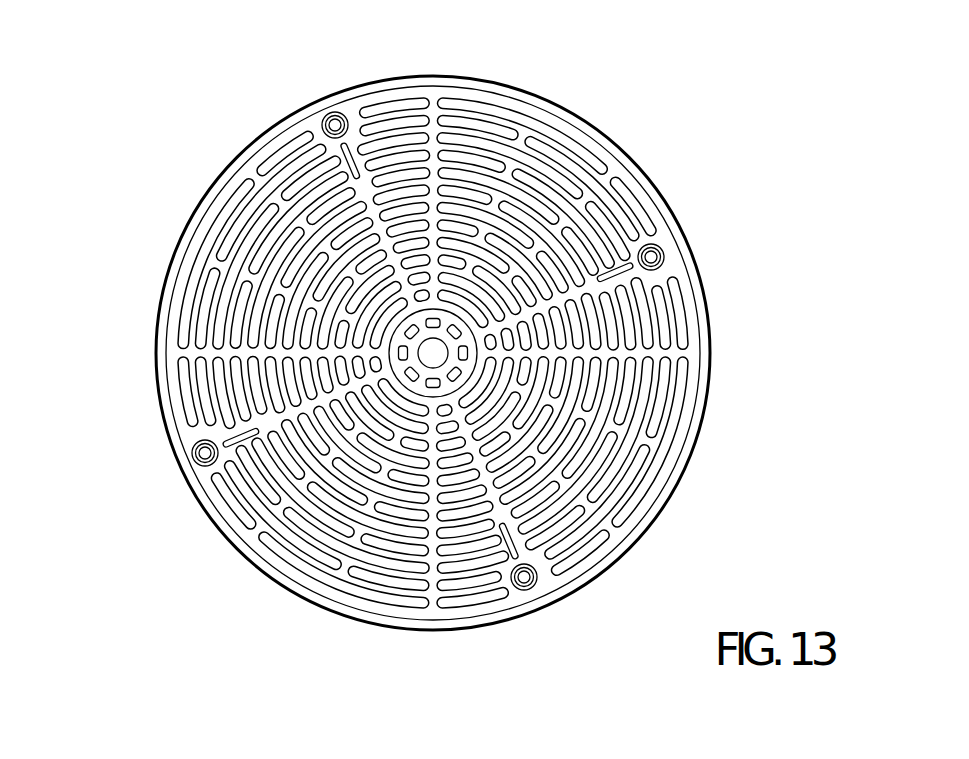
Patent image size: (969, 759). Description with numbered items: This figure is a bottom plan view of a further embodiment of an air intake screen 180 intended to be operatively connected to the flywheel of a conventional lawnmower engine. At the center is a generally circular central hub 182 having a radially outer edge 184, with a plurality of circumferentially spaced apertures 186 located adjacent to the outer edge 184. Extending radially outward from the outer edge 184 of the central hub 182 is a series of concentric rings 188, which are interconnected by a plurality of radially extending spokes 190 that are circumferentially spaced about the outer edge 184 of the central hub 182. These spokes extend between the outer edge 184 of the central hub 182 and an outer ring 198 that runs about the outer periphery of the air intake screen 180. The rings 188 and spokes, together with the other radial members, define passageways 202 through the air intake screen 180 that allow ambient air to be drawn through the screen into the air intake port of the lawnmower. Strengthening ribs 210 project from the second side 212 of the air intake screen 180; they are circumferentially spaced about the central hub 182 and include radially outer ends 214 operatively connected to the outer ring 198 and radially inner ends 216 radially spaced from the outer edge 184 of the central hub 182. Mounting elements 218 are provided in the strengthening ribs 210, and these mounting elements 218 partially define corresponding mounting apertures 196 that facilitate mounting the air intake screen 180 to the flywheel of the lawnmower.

The air intake screen 180 is at (737, 392).
The central hub 182 is at (640, 228).
The radially outer edge 184 is at (437, 180).
The apertures 186 is at (402, 322).
The concentric rings 188 is at (385, 172).
The spokes 190 is at (240, 372).
The mounting apertures 196 is at (322, 124).
The outer ring 198 is at (600, 92).
The passageways 202 is at (265, 165).
The strengthening ribs 210 is at (350, 130).
The second side 212 is at (197, 258).
The radially outer ends 214 is at (323, 112).
The radially inner ends 216 is at (362, 158).
The mounting elements 218 is at (308, 140).